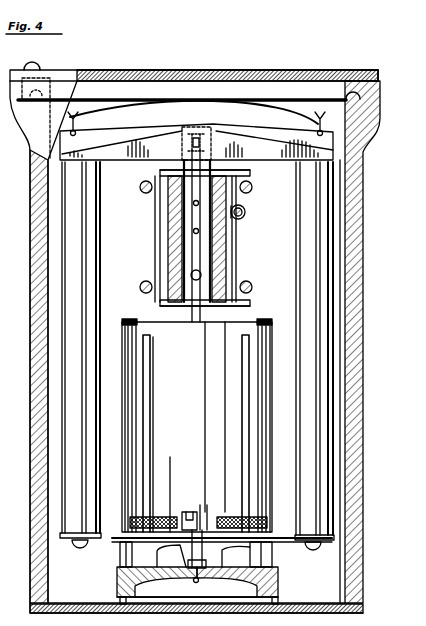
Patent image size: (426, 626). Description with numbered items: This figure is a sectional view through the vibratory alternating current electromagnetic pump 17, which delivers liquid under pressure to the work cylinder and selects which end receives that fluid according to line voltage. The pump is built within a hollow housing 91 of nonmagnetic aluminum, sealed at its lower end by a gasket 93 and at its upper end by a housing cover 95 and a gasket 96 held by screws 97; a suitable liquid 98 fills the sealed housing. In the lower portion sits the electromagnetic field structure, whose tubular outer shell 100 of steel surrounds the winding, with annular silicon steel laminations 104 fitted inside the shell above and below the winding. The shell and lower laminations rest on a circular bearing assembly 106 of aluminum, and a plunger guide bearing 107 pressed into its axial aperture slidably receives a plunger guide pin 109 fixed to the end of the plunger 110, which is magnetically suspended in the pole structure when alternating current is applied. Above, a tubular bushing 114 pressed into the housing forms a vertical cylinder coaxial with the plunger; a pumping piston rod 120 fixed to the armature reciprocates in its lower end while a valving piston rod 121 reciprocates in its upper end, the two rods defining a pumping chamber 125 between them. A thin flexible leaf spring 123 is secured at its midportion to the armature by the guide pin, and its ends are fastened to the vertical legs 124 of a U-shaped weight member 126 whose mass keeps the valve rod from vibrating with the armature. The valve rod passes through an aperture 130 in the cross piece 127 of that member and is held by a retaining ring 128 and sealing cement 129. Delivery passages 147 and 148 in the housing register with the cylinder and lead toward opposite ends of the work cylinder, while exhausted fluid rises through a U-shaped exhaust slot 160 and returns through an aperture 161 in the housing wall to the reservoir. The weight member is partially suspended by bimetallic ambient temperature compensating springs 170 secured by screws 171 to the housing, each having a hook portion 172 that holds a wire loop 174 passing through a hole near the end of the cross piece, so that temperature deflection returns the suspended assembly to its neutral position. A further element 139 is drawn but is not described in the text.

The vibratory alternating current electromagnetic pump 17 is at (382, 444).
The hollow housing 91 is at (363, 466).
The gasket 93 is at (318, 603).
The housing cover 95 is at (320, 71).
The gasket 96 is at (356, 72).
The screws 97 is at (40, 62).
The liquid 98 is at (191, 84).
The tubular outer shell 100 is at (197, 418).
The annular silicon steel laminations 104 is at (264, 522).
The circular bearing assembly 106 is at (122, 580).
The plunger guide bearing 107 is at (196, 582).
The plunger guide pin 109 is at (206, 550).
The plunger 110 is at (196, 514).
The tubular bushing 114 is at (182, 304).
The pumping piston rod 120 is at (215, 305).
The valving piston rod 121 is at (213, 167).
The leaf spring 123 is at (292, 542).
The vertical legs 124 is at (72, 433).
The pumping chamber 125 is at (191, 275).
The U-shaped weight member 126 is at (343, 304).
The cross piece 127 is at (124, 157).
The retaining ring 128 is at (181, 167).
The sealing cement 129 is at (184, 134).
The aperture 130 is at (208, 131).
The screw 139 is at (252, 283).
The delivery passage 147 is at (193, 203).
The delivery passage 148 is at (193, 231).
The U-shaped exhaust slot 160 is at (245, 211).
The aperture 161 is at (255, 220).
The bimetallic ambient temperature compensating springs 170 is at (124, 99).
The screws 171 is at (346, 93).
The hook portion 172 is at (82, 119).
The wire loop 174 is at (68, 124).